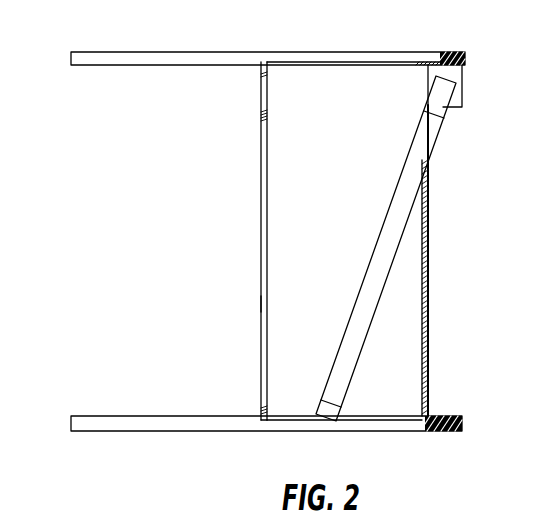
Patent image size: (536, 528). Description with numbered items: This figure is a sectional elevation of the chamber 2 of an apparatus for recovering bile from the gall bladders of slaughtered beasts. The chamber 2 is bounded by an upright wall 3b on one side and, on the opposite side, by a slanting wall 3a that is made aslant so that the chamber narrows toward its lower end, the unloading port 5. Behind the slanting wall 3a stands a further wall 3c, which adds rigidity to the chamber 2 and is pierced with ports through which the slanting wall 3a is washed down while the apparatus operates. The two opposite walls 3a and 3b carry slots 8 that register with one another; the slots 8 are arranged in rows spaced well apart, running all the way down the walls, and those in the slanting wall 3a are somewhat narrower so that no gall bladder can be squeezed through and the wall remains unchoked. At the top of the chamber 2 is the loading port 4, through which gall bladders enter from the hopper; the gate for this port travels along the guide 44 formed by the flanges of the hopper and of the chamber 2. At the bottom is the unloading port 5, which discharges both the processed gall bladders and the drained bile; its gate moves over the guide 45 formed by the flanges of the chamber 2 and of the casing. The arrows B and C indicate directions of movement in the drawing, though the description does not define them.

The guide 44 is at (204, 63).
The loading port 4 is at (333, 63).
The chamber 2 is at (430, 389).
The wall 3b is at (256, 214).
The slots 8 is at (262, 305).
The slanting wall 3a is at (413, 211).
The wall 3c is at (430, 308).
The guide 45 is at (210, 422).
The unloading port 5 is at (293, 420).
The direction of movement B is at (132, 233).
The direction of movement C is at (471, 236).